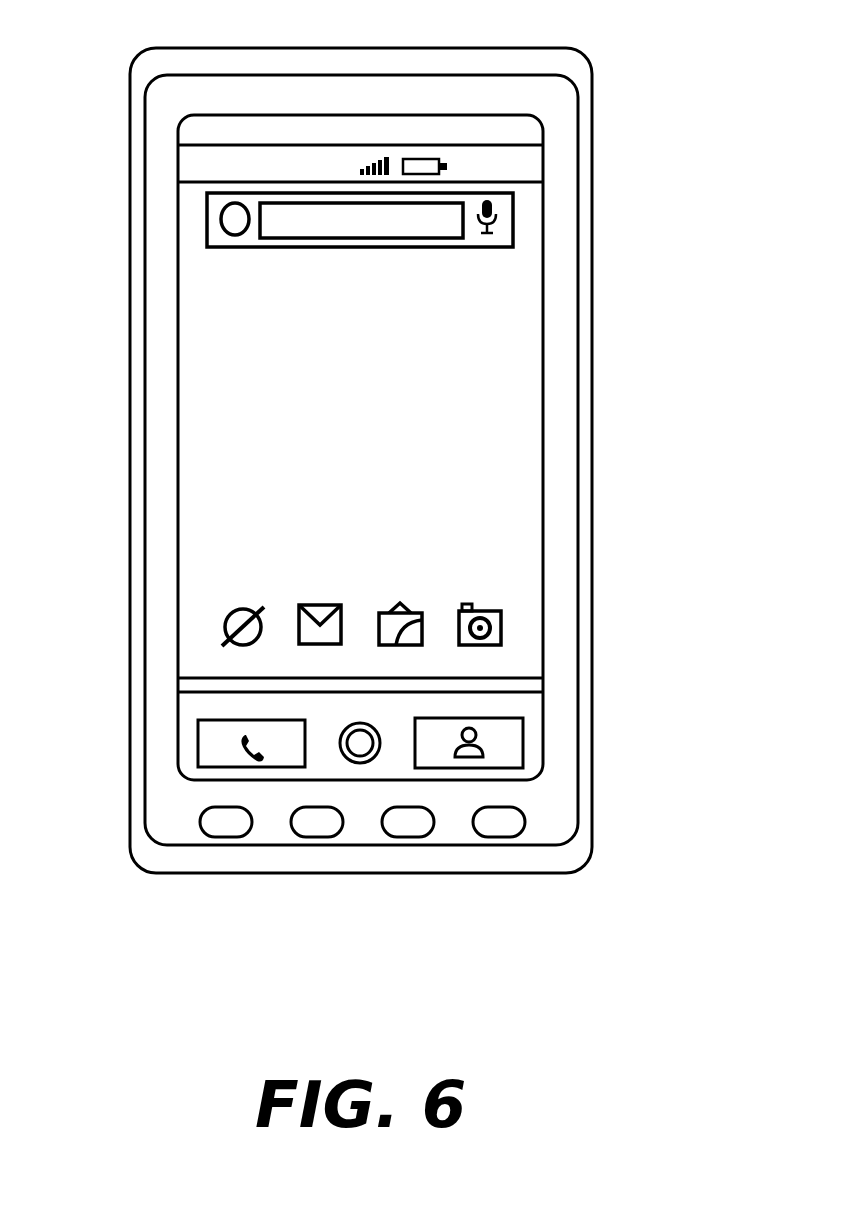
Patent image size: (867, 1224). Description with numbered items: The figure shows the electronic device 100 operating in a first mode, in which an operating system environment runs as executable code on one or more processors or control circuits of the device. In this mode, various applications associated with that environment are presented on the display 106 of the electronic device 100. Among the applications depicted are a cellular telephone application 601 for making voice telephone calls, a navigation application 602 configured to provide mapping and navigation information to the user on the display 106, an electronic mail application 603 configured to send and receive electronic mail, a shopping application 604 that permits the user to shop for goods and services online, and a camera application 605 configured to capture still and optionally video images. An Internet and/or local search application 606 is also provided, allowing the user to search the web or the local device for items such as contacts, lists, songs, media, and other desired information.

The electronic device 100 is at (642, 73).
The display 106 is at (372, 438).
The cellular telephone application 601 is at (200, 745).
The navigation application 602 is at (242, 607).
The electronic mail application 603 is at (321, 605).
The shopping application 604 is at (400, 607).
The camera application 605 is at (480, 610).
The Internet and/or local search application 606 is at (333, 238).